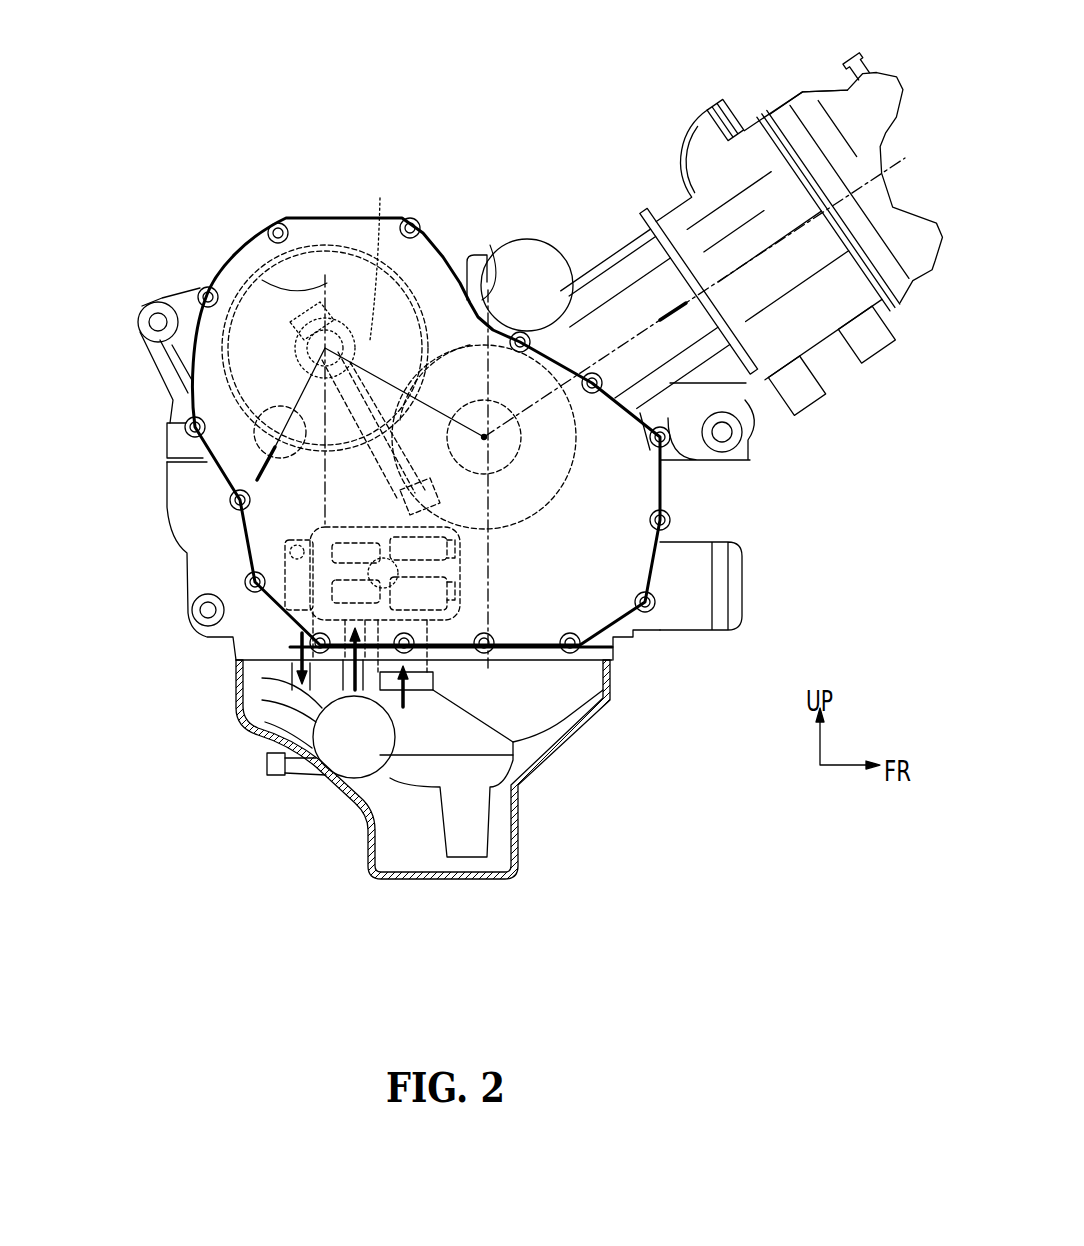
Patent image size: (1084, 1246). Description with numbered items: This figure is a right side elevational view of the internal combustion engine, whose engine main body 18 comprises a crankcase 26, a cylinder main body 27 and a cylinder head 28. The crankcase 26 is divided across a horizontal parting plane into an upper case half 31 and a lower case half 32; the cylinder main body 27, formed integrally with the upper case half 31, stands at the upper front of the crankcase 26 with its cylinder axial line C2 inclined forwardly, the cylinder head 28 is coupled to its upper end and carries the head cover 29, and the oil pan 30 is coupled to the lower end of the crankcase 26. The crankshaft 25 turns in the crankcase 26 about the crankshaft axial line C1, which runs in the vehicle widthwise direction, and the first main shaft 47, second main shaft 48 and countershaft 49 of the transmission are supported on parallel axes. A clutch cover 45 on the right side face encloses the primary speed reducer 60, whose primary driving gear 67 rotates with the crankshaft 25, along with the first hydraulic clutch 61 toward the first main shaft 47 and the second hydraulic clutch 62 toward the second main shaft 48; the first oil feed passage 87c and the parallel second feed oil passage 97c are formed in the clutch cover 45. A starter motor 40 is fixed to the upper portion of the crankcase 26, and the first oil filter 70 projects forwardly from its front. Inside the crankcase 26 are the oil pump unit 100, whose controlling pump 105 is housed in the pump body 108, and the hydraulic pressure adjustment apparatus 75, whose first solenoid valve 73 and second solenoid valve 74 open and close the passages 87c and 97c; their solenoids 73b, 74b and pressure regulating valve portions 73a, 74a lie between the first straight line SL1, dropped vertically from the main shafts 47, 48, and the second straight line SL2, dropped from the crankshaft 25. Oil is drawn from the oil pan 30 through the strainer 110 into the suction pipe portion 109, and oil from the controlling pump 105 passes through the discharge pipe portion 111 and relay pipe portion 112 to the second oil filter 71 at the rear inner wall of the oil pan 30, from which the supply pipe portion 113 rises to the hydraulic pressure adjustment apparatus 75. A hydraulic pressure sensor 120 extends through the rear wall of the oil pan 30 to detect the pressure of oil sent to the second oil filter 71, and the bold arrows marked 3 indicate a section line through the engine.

The engine main body 18 is at (766, 252).
The crankshaft 25 is at (468, 380).
The crankcase 26 is at (148, 532).
The cylinder main body 27 is at (598, 280).
The cylinder head 28 is at (687, 207).
The head cover 29 is at (893, 206).
The oil pan 30 is at (522, 832).
The upper case half 31 is at (175, 428).
The lower case half 32 is at (170, 561).
The starter motor 40 is at (522, 258).
The clutch cover 45 is at (603, 418).
The first main shaft 47 is at (333, 318).
The second main shaft 48 is at (325, 348).
The countershaft 49 is at (225, 373).
The primary speed reducer 60 is at (538, 352).
The first hydraulic clutch 61 is at (262, 262).
The second hydraulic clutch 62 is at (325, 354).
The primary driving gear 67 is at (573, 455).
The first oil filter 70 is at (693, 620).
The second oil filter 71 is at (345, 760).
The first solenoid valve 73 is at (431, 525).
The pressure regulating valve portion 73a is at (333, 528).
The solenoid 73b is at (456, 552).
The second solenoid valve 74 is at (450, 596).
The pressure regulating valve portion 74a is at (206, 612).
The solenoid 74b is at (440, 594).
The hydraulic pressure adjustment apparatus 75 is at (454, 558).
The first oil feed passage 87c is at (383, 253).
The second feed oil passage 97c is at (198, 292).
The oil pump unit 100 is at (272, 557).
The controlling pump 105 is at (368, 532).
The pump body 108 is at (297, 552).
The suction pipe portion 109 is at (433, 682).
The strainer 110 is at (540, 753).
The discharge pipe portion 111 is at (268, 680).
The relay pipe portion 112 is at (292, 700).
The supply pipe portion 113 is at (300, 730).
The hydraulic pressure sensor 120 is at (275, 778).
The crankshaft axial line C1 is at (488, 425).
The cylinder axial line C2 is at (790, 234).
The first straight line SL1 is at (267, 287).
The second straight line SL2 is at (490, 262).
The section line 3 is at (250, 468).